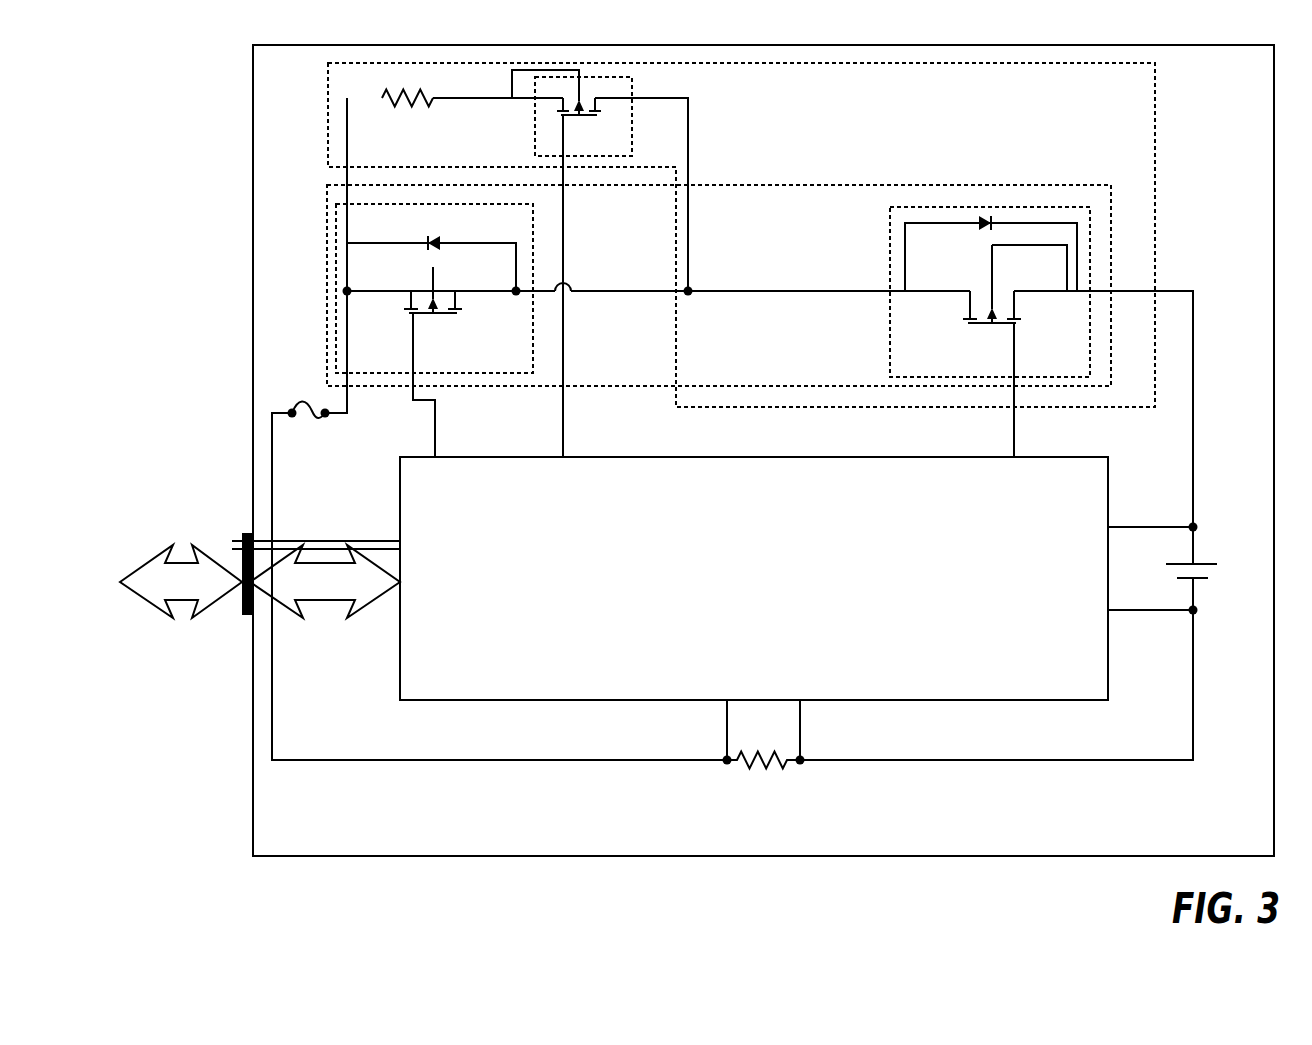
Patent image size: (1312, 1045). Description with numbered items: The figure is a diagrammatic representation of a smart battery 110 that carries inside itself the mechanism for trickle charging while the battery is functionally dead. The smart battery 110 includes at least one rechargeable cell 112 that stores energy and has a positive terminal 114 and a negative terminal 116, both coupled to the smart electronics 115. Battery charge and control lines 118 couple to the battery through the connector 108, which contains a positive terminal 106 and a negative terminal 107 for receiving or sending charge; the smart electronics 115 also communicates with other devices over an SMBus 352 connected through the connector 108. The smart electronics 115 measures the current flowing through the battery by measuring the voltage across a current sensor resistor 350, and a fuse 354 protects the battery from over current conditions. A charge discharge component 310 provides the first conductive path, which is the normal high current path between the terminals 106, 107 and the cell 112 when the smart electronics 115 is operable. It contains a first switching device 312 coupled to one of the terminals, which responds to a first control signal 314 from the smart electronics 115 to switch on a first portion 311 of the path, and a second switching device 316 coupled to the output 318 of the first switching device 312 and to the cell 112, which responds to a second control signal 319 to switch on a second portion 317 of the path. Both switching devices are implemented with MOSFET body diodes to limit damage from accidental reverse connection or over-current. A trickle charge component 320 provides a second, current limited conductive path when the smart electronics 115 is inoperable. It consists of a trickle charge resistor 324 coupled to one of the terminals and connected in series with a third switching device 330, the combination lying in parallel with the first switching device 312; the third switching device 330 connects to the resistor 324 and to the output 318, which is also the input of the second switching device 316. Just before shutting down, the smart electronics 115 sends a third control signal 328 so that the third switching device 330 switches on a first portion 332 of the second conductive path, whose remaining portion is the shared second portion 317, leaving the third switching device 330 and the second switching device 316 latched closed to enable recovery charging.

The positive terminal 106 is at (232, 541).
The negative terminal 107 is at (232, 549).
The connector 108 is at (238, 615).
The smart battery 110 is at (465, 846).
The rechargeable cell 112 is at (1208, 563).
The positive terminal 114 is at (1194, 524).
The smart electronics 115 is at (769, 604).
The negative terminal 116 is at (1191, 613).
The battery charge and control lines 118 is at (198, 594).
The charge discharge component 310 is at (813, 185).
The first portion of the first conductive path 311 is at (608, 291).
The first switching device 312 is at (525, 361).
The first control signal 314 is at (437, 432).
The second switching device 316 is at (932, 366).
The second portion of the first conductive path 317 is at (773, 291).
The output of the first switching device 318 is at (507, 294).
The second control signal 319 is at (1015, 438).
The trickle charge component 320 is at (1156, 118).
The trickle charge resistor 324 is at (430, 108).
The third control signal 328 is at (565, 223).
The third switching device 330 is at (622, 144).
The first portion of the second conductive path 332 is at (646, 98).
The current sensor resistor 350 is at (783, 766).
The SMBus 352 is at (341, 594).
The fuse 354 is at (312, 412).